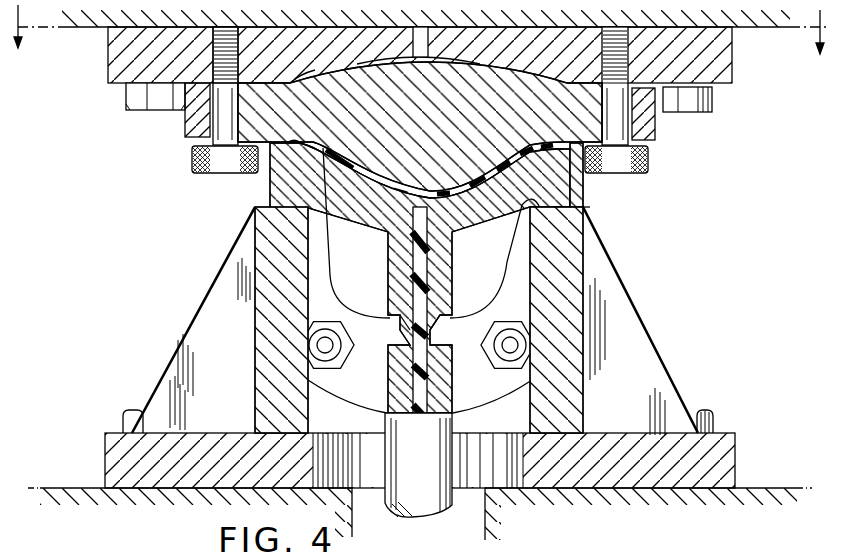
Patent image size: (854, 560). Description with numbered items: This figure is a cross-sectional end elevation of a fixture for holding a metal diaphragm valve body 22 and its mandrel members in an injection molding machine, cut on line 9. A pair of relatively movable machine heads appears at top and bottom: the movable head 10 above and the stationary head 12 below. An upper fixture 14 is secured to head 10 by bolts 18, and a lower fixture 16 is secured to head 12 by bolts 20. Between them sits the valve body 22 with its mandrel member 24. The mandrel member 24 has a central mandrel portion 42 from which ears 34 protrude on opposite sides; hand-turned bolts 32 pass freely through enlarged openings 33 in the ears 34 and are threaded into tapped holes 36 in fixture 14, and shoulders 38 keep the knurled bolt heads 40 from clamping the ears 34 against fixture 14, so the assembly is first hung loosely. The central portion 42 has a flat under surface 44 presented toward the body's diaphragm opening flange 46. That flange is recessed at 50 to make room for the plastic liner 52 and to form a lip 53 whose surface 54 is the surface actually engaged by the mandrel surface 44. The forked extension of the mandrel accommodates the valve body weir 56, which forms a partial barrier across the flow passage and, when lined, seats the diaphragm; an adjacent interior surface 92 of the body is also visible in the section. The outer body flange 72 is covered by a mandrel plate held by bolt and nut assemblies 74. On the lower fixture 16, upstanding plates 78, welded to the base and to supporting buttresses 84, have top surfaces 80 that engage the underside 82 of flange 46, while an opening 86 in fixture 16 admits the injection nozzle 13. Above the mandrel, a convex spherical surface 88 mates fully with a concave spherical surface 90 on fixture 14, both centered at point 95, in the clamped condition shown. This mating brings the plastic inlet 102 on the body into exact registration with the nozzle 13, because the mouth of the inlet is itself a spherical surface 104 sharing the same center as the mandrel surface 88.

The section line 9- 9 is at (420, 41).
The movable machine head 10 is at (752, 29).
The stationary machine head 12 is at (766, 488).
The injection nozzle 13 is at (454, 388).
The upper fixture 14 is at (118, 72).
The lower fixture 16 is at (446, 476).
The bolts 18 is at (682, 108).
The bolts 20 is at (128, 412).
The metal diaphragm valve body 22 is at (428, 287).
The mandrel member 24 is at (577, 152).
The hand-turned bolts 32 is at (416, 105).
The enlarged openings 33 is at (221, 132).
The mandrel member ears 34 is at (194, 120).
The tapped holes 36 is at (220, 38).
The shoulders 38 is at (214, 80).
The knurled bolt heads 40 is at (223, 162).
The central mandrel portion 42 is at (420, 112).
The under surface 44 is at (253, 148).
The diaphragm opening flange 46 is at (586, 212).
The recess 50 is at (330, 208).
The plastic liner 52 is at (466, 196).
The lip 53 is at (536, 140).
The lip surface 54 is at (556, 143).
The valve body weir 56 is at (392, 222).
The body flange 72 is at (477, 393).
The bolt and nut assemblies 74 is at (340, 368).
The upstanding plates 78 is at (462, 320).
The top surfaces 80 is at (526, 240).
The flange underside 82 is at (588, 235).
The supporting buttresses 84 is at (230, 384).
The nozzle opening 86 is at (508, 470).
The convex spherical surface 88 is at (360, 63).
The concave spherical surface 90 is at (290, 83).
The inner surface 92 is at (318, 258).
The sphere center 95 is at (410, 340).
The plastic inlet 102 is at (440, 317).
The spherical mouth surface 104 is at (412, 324).